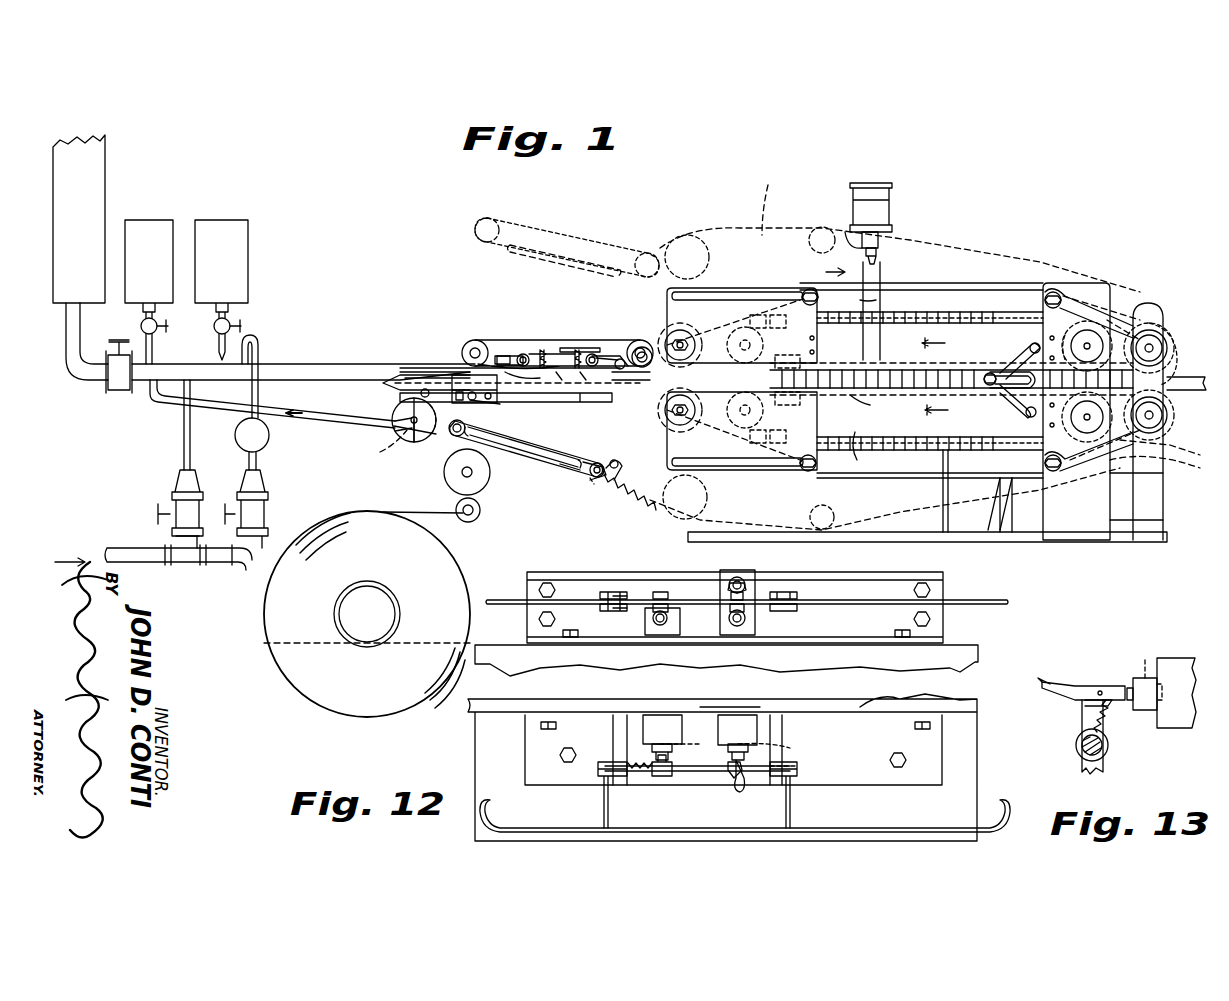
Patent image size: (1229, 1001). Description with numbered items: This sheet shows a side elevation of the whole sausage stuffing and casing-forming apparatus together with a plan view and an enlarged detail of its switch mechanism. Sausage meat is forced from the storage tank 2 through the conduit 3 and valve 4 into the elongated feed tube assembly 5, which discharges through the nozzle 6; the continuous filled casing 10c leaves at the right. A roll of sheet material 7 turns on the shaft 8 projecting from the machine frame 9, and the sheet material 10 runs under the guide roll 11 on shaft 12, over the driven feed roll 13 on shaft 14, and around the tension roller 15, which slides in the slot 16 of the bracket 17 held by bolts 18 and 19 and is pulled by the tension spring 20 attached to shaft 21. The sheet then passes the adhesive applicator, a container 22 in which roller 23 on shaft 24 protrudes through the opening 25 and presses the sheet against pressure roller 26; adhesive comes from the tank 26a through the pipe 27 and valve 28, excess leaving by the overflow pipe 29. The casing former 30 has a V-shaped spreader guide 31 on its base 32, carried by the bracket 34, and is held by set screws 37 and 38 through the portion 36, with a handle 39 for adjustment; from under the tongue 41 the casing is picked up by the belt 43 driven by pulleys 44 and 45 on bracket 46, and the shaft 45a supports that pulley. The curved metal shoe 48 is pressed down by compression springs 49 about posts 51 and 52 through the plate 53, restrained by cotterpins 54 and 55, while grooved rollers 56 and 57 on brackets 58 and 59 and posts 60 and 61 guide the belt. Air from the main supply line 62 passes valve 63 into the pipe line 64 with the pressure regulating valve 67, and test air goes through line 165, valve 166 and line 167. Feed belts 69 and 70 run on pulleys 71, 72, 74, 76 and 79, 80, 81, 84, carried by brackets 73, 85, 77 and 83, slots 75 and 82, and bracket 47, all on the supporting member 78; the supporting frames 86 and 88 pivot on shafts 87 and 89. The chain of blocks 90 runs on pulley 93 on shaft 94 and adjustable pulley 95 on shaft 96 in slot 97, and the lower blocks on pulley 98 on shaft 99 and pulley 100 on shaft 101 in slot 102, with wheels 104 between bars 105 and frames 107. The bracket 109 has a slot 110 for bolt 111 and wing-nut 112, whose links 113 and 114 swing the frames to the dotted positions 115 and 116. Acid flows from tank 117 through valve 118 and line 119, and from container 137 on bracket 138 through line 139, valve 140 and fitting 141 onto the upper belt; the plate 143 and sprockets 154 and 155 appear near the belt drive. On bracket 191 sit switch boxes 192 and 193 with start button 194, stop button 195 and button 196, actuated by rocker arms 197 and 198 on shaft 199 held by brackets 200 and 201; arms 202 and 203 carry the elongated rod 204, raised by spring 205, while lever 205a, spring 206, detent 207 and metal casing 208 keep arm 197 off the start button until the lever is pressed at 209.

In FIG. 1, the storage tank 2 is at (104, 172).
In FIG. 1, the conduit 3 is at (70, 345).
In FIG. 1, the valve 4 is at (117, 385).
In FIG. 1, the feed tube assembly 5 is at (300, 382).
In FIG. 1, the nozzle 6 is at (912, 335).
In FIG. 1, the roll of sheet material 7 is at (292, 670).
In FIG. 1, the shaft 8 is at (367, 630).
In FIG. 1, the machine frame 9 is at (735, 594).
In FIG. 12, the machine frame 9 is at (728, 710).
In FIG. 1, the sheet material 10 is at (420, 515).
In FIG. 1, the continuous filled casing 10c is at (1180, 378).
In FIG. 1, the guide roll 11 is at (474, 518).
In FIG. 1, the shaft 12 is at (478, 512).
In FIG. 1, the feed roll 13 is at (450, 484).
In FIG. 1, the shaft 14 is at (472, 476).
In FIG. 1, the tension roller 15 is at (562, 468).
In FIG. 1, the slot 16 is at (525, 460).
In FIG. 1, the bracket 17 is at (590, 482).
In FIG. 1, the bolt 18 is at (608, 480).
In FIG. 1, the bolt 19 is at (450, 436).
In FIG. 1, the tension spring 20 is at (628, 500).
In FIG. 1, the shaft 21 is at (590, 476).
In FIG. 1, the tank or container 22 is at (414, 444).
In FIG. 1, the roller 23 is at (381, 450).
In FIG. 1, the shaft 24 is at (395, 428).
In FIG. 1, the opening 25 is at (414, 441).
In FIG. 1, the pressure roller 26 is at (418, 380).
In FIG. 1, the tank 26a is at (152, 220).
In FIG. 1, the conduit or pipe 27 is at (300, 420).
In FIG. 1, the valve 28 is at (170, 326).
In FIG. 1, the overflow pipe 29 is at (390, 423).
In FIG. 1, the casing former 30 is at (412, 344).
In FIG. 1, the spreader guide 31 is at (395, 375).
In FIG. 1, the base 32 is at (474, 399).
In FIG. 1, the bracket 34 is at (596, 403).
In FIG. 1, the portion 36 is at (508, 403).
In FIG. 1, the set screw 37 is at (492, 400).
In FIG. 1, the set screw 38 is at (456, 393).
In FIG. 1, the handle 39 is at (475, 400).
In FIG. 1, the tongue 41 is at (430, 366).
In FIG. 1, the belt 43 is at (560, 354).
In FIG. 1, the pulley 44 is at (468, 346).
In FIG. 1, the pulley 45 is at (644, 346).
In FIG. 1, the shaft 45a is at (638, 382).
In FIG. 1, the bracket 46 is at (636, 346).
In FIG. 1, the bracket 47 is at (705, 300).
In FIG. 1, the curved metal shoe 48 is at (585, 380).
In FIG. 1, the compression spring 49 is at (560, 382).
In FIG. 1, the post 51 is at (528, 354).
In FIG. 1, the post 52 is at (580, 348).
In FIG. 1, the plate 53 is at (510, 355).
In FIG. 1, the cotterpin 54 is at (545, 352).
In FIG. 1, the cotterpin 55 is at (584, 356).
In FIG. 1, the grooved roller 56 is at (495, 360).
In FIG. 1, the grooved roller 57 is at (620, 372).
In FIG. 1, the bracket 58 is at (501, 355).
In FIG. 1, the bracket 59 is at (604, 382).
In FIG. 1, the post 60 is at (532, 378).
In FIG. 1, the post 61 is at (600, 356).
In FIG. 1, the main supply line 62 is at (215, 566).
In FIG. 1, the valve 63 is at (264, 500).
In FIG. 1, the pipe line 64 is at (256, 352).
In FIG. 1, the pressure regulating valve 67 is at (236, 432).
In FIG. 1, the feed belt 69 is at (962, 282).
In FIG. 1, the feed belt 70 is at (870, 478).
In FIG. 1, the pulley 71 is at (1172, 338).
In FIG. 1, the guide pulley 72 is at (1066, 296).
In FIG. 1, the bracket 73 is at (1085, 300).
In FIG. 1, the pulley 74 is at (820, 298).
In FIG. 1, the slot 75 is at (730, 300).
In FIG. 1, the pulley 76 is at (698, 350).
In FIG. 1, the bracket 77 is at (1152, 305).
In FIG. 1, the supporting member 78 is at (1062, 545).
In FIG. 1, the pulley 79 is at (1172, 428).
In FIG. 1, the guide pulley 80 is at (1048, 472).
In FIG. 1, the pulley 81 is at (808, 472).
In FIG. 1, the slot 82 is at (732, 462).
In FIG. 1, the bracket 83 is at (712, 455).
In FIG. 1, the pulley 84 is at (664, 420).
In FIG. 1, the bracket 85 is at (1080, 470).
In FIG. 1, the supporting frame 86 is at (920, 340).
In FIG. 1, the shaft 87 is at (1154, 348).
In FIG. 1, the supporting frame 88 is at (863, 451).
In FIG. 1, the shaft 89 is at (1155, 420).
In FIG. 1, the chain of blocks 90 is at (950, 330).
In FIG. 1, the pulley 93 is at (1118, 306).
In FIG. 1, the shaft 94 is at (1090, 345).
In FIG. 1, the pulley 95 is at (816, 344).
In FIG. 1, the shaft 96 is at (756, 328).
In FIG. 1, the slot 97 is at (738, 338).
In FIG. 1, the pulley 98 is at (1155, 467).
In FIG. 1, the shaft 99 is at (1112, 460).
In FIG. 1, the pulley 100 is at (816, 408).
In FIG. 1, the shaft 101 is at (756, 430).
In FIG. 1, the slot 102 is at (736, 410).
In FIG. 1, the wheel 104 is at (860, 398).
In FIG. 1, the bar 105 is at (1066, 350).
In FIG. 1, the frame 107 is at (1084, 428).
In FIG. 1, the supporting bracket 109 is at (1000, 492).
In FIG. 1, the slot 110 is at (1008, 412).
In FIG. 1, the bolt 111 is at (975, 395).
In FIG. 1, the wing-nut 112 is at (996, 372).
In FIG. 1, the link 113 is at (1006, 350).
In FIG. 1, the link 114 is at (990, 442).
In FIG. 1, the dotted line position 115 is at (900, 229).
In FIG. 1, the dotted line position 116 is at (915, 470).
In FIG. 1, the tank 117 is at (228, 220).
In FIG. 1, the valve 118 is at (242, 328).
In FIG. 1, the line 119 is at (216, 353).
In FIG. 1, the container 137 is at (886, 205).
In FIG. 1, the bracket 138 is at (884, 278).
In FIG. 1, the line 139 is at (848, 234).
In FIG. 1, the valve 140 is at (882, 240).
In FIG. 1, the fitting 141 is at (880, 262).
In FIG. 1, the plate 143 is at (952, 646).
In FIG. 1, the sprocket 154 is at (1175, 412).
In FIG. 1, the sprocket 155 is at (1170, 335).
In FIG. 1, the line 165 is at (195, 526).
In FIG. 1, the valve 166 is at (204, 498).
In FIG. 1, the line 167 is at (182, 432).
In FIG. 1, the bracket 191 is at (888, 583).
In FIG. 12, the bracket 191 is at (820, 710).
In FIG. 1, the switch box 192 is at (752, 572).
In FIG. 12, the switch box 192 is at (742, 715).
In FIG. 13, the switch box 192 is at (1175, 657).
In FIG. 1, the switch box 193 is at (660, 638).
In FIG. 12, the switch box 193 is at (665, 715).
In FIG. 1, the start button 194 is at (728, 584).
In FIG. 12, the start button 194 is at (778, 750).
In FIG. 13, the start button 194 is at (1145, 674).
In FIG. 1, the stop button 195 is at (740, 625).
In FIG. 1, the button 196 is at (652, 622).
In FIG. 12, the button 196 is at (672, 740).
In FIG. 1, the rocker arm 197 is at (746, 618).
In FIG. 12, the rocker arm 197 is at (730, 778).
In FIG. 13, the rocker arm 197 is at (1080, 718).
In FIG. 1, the rocker arm 198 is at (669, 596).
In FIG. 12, the rocker arm 198 is at (654, 775).
In FIG. 12, the shaft 199 is at (692, 772).
In FIG. 13, the shaft 199 is at (1104, 750).
In FIG. 1, the bracket 200 is at (625, 594).
In FIG. 12, the bracket 200 is at (614, 732).
In FIG. 1, the bracket 201 is at (798, 608).
In FIG. 12, the bracket 201 is at (784, 734).
In FIG. 1, the arm 202 is at (606, 592).
In FIG. 12, the arm 202 is at (605, 805).
In FIG. 1, the arm 203 is at (798, 596).
In FIG. 12, the arm 203 is at (792, 808).
In FIG. 1, the elongated rod 204 is at (968, 604).
In FIG. 12, the elongated rod 204 is at (888, 826).
In FIG. 12, the spring 205 is at (628, 770).
In FIG. 12, the lever 205a is at (796, 770).
In FIG. 13, the lever 205a is at (1062, 682).
In FIG. 13, the spring 206 is at (1106, 714).
In FIG. 13, the detent 207 is at (1083, 704).
In FIG. 13, the metal casing 208 is at (1128, 686).
In FIG. 1, the lever press point 209 is at (748, 588).
In FIG. 12, the lever press point 209 is at (740, 792).
In FIG. 13, the lever press point 209 is at (1044, 680).